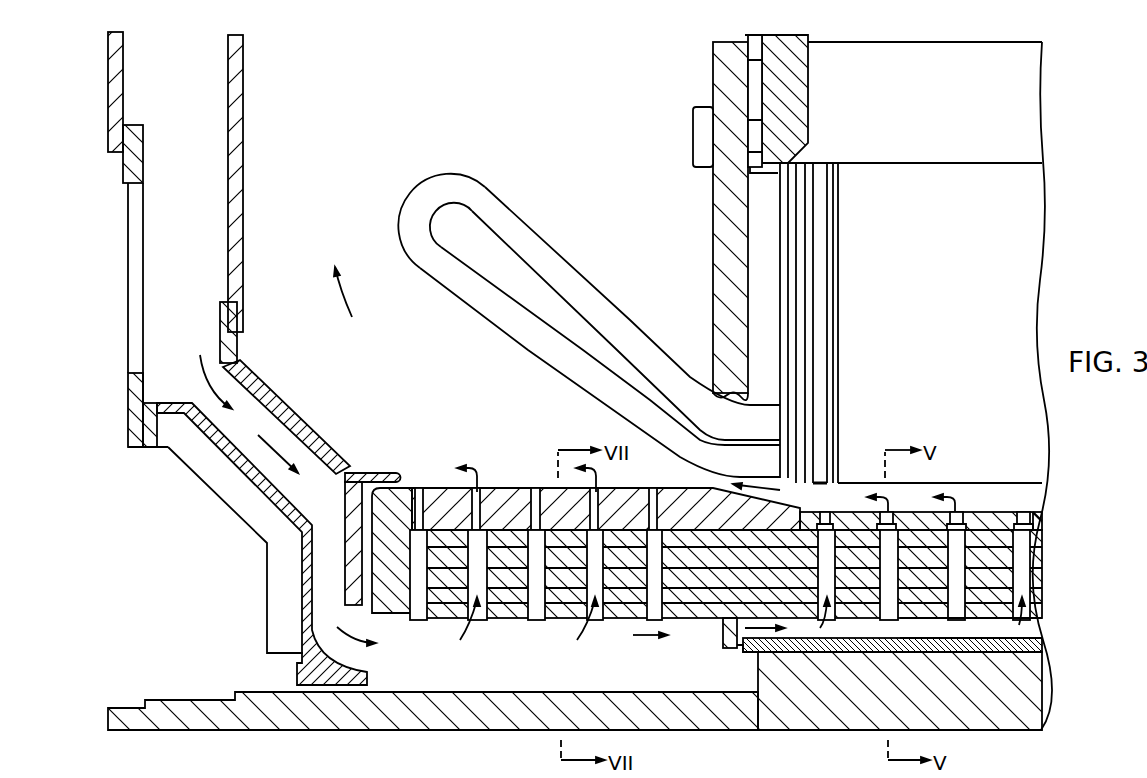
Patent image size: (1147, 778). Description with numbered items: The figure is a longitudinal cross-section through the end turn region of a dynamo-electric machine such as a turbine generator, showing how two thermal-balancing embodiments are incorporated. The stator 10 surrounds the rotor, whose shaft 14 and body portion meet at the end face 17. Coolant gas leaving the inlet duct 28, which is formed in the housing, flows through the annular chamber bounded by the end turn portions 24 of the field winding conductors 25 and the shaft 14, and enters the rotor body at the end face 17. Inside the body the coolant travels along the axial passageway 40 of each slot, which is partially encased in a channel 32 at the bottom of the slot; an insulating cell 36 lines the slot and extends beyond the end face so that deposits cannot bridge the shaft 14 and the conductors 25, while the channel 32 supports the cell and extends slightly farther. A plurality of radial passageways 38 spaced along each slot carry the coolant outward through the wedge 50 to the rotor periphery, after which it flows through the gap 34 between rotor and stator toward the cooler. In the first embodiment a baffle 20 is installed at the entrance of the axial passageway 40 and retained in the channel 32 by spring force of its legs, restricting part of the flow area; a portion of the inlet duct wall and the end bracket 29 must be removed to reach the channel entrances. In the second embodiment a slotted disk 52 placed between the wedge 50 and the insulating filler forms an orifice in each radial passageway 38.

The stator 10 is at (887, 45).
The shaft 14 is at (105, 712).
The end face 17 is at (758, 676).
The baffle 20 is at (733, 632).
The end turn portions 24 is at (560, 620).
The field winding conductors 25 is at (1058, 532).
The inlet duct 28 is at (218, 150).
The end bracket 29 is at (250, 531).
The channel 32 is at (740, 647).
The gap 34 is at (910, 470).
The insulating cell 36 is at (752, 655).
The radial passageways 38 is at (1020, 510).
The axial passageway 40 is at (1037, 628).
The wedge 50 is at (972, 510).
The disk 52 is at (1040, 512).